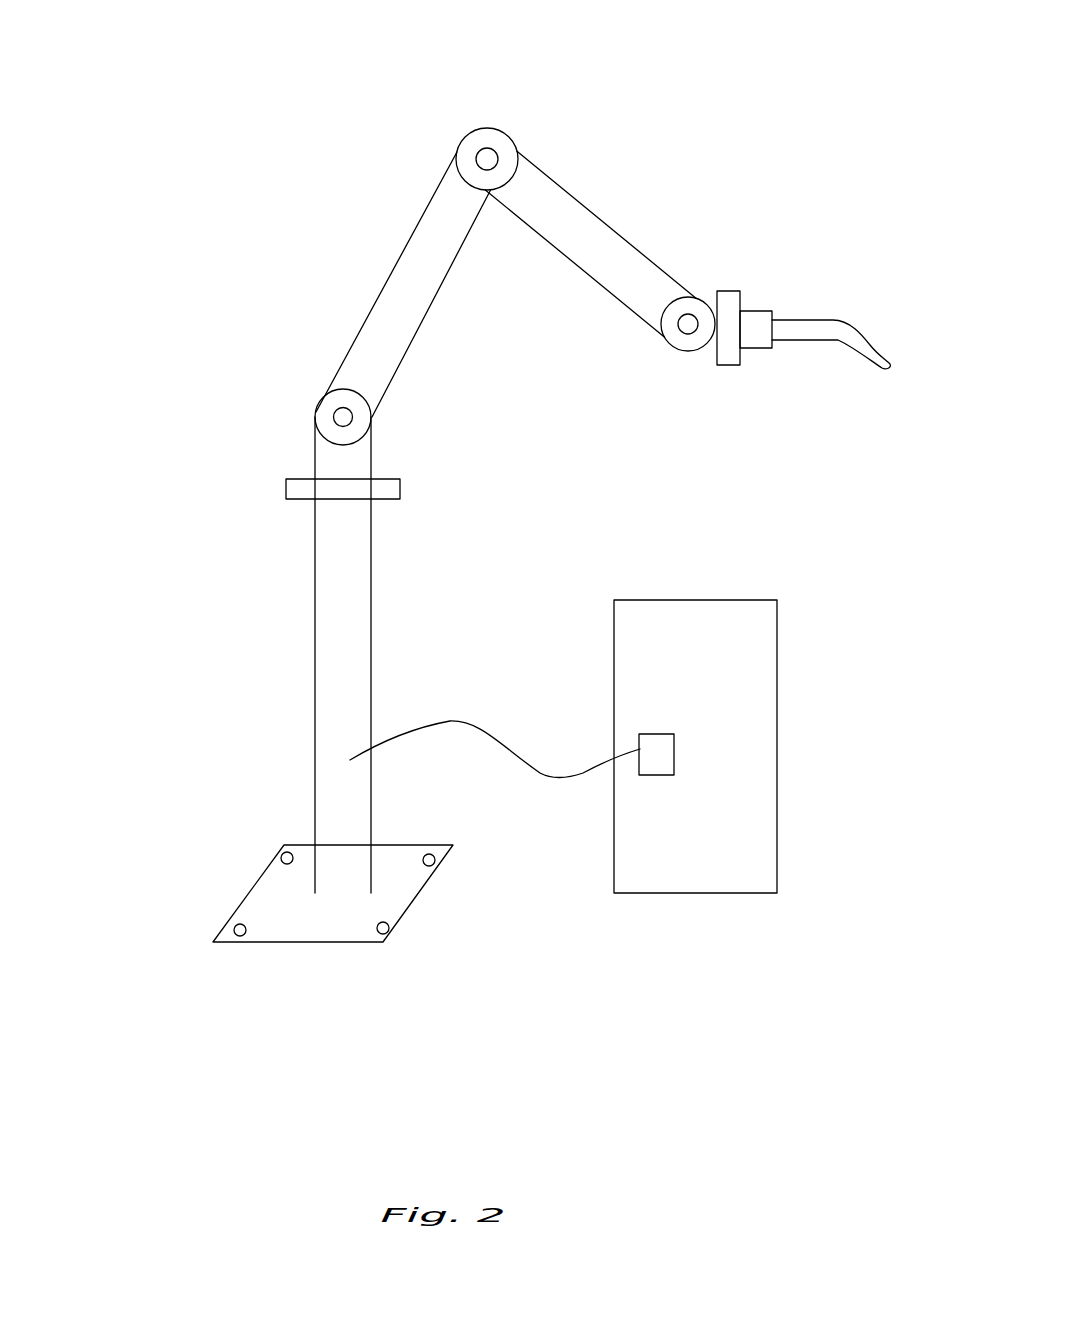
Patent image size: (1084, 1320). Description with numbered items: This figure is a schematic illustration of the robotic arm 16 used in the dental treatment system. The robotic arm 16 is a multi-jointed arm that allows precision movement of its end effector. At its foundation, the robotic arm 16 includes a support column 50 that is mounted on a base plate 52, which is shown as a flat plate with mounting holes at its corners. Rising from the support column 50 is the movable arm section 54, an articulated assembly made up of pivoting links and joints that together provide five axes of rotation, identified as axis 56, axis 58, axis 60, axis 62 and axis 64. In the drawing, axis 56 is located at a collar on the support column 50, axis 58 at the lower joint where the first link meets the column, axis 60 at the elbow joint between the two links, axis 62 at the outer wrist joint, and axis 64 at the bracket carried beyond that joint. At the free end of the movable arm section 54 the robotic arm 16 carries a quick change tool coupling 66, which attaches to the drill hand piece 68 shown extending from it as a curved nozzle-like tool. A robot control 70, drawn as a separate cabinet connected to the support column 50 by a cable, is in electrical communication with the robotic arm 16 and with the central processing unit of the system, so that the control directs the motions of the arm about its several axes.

The robotic arm 16 is at (690, 103).
The support column 50 is at (328, 623).
The base plate 52 is at (253, 902).
The movable arm section 54 is at (483, 342).
The axis of rotation 56 is at (302, 493).
The axis of rotation 58 is at (330, 412).
The axis of rotation 60 is at (496, 137).
The axis of rotation 62 is at (697, 305).
The axis of rotation 64 is at (727, 360).
The quick change tool coupling 66 is at (760, 317).
The drill hand piece 68 is at (840, 333).
The robot control 70 is at (776, 620).